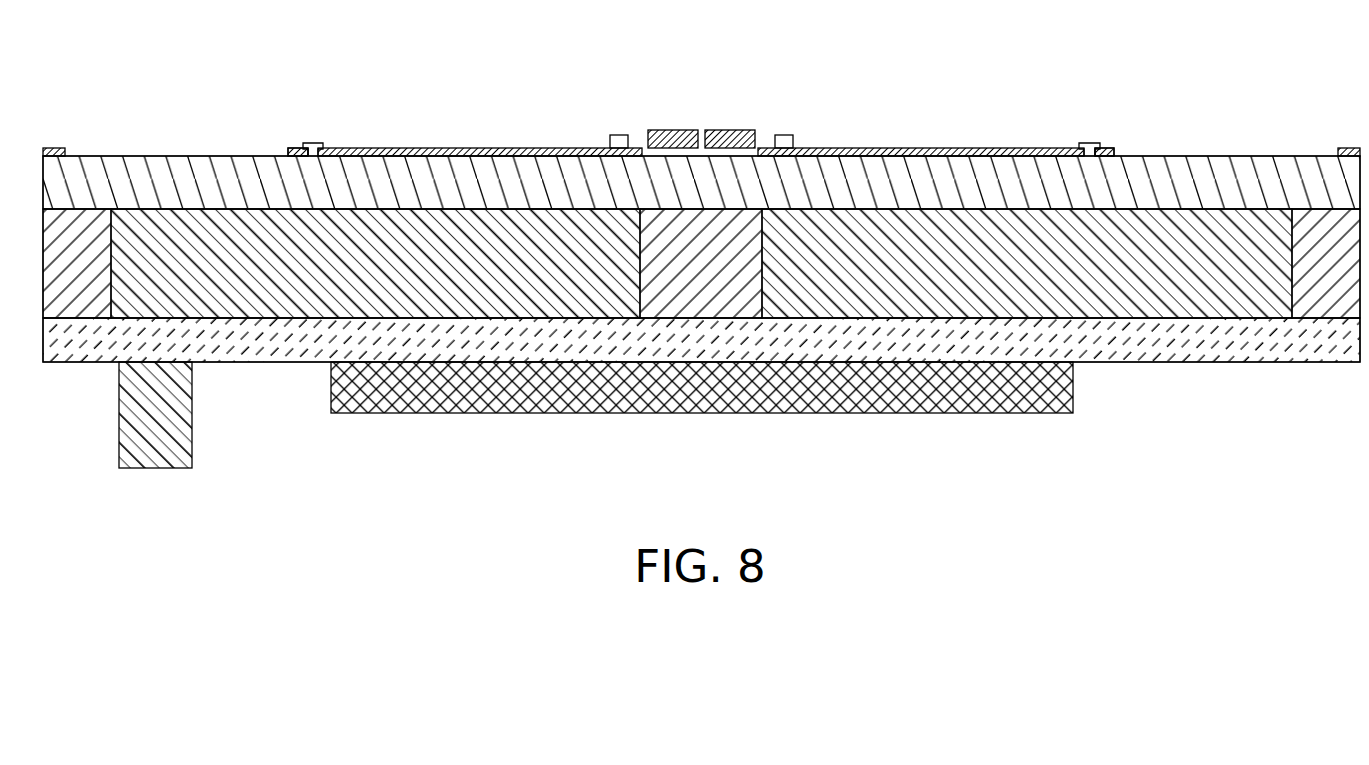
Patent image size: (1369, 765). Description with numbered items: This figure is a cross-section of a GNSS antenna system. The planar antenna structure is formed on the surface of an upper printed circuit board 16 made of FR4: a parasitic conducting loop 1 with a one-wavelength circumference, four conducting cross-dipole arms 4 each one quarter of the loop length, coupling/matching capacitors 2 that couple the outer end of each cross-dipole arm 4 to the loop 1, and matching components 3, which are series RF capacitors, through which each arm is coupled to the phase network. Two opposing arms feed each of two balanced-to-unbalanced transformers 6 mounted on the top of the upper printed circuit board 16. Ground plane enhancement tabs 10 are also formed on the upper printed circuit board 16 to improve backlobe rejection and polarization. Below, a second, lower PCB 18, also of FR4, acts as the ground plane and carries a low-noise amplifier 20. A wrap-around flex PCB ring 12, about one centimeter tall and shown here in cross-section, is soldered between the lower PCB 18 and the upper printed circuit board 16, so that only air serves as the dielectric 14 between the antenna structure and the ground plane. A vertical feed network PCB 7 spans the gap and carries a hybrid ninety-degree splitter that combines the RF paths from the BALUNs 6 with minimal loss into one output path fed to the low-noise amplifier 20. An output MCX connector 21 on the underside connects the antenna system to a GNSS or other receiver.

The parasitic conducting loop 1 is at (291, 150).
The coupling/matching capacitor 2 is at (312, 142).
The matching components 3 is at (620, 135).
The conducting cross-dipole arm 4 is at (443, 148).
The balanced-to-unbalanced transformer (BALUN) 6 is at (675, 130).
The vertical feed network PCB 7 is at (700, 280).
The ground plane enhancement tabs 10 is at (55, 148).
The wrap-around flex PCB ring 12 is at (68, 270).
The dielectric 14 is at (265, 270).
The upper printed circuit board 16 is at (173, 172).
The lower PCB 18 is at (1108, 340).
The low-noise amplifier (LNA) 20 is at (626, 398).
The output MCX connector 21 is at (156, 440).